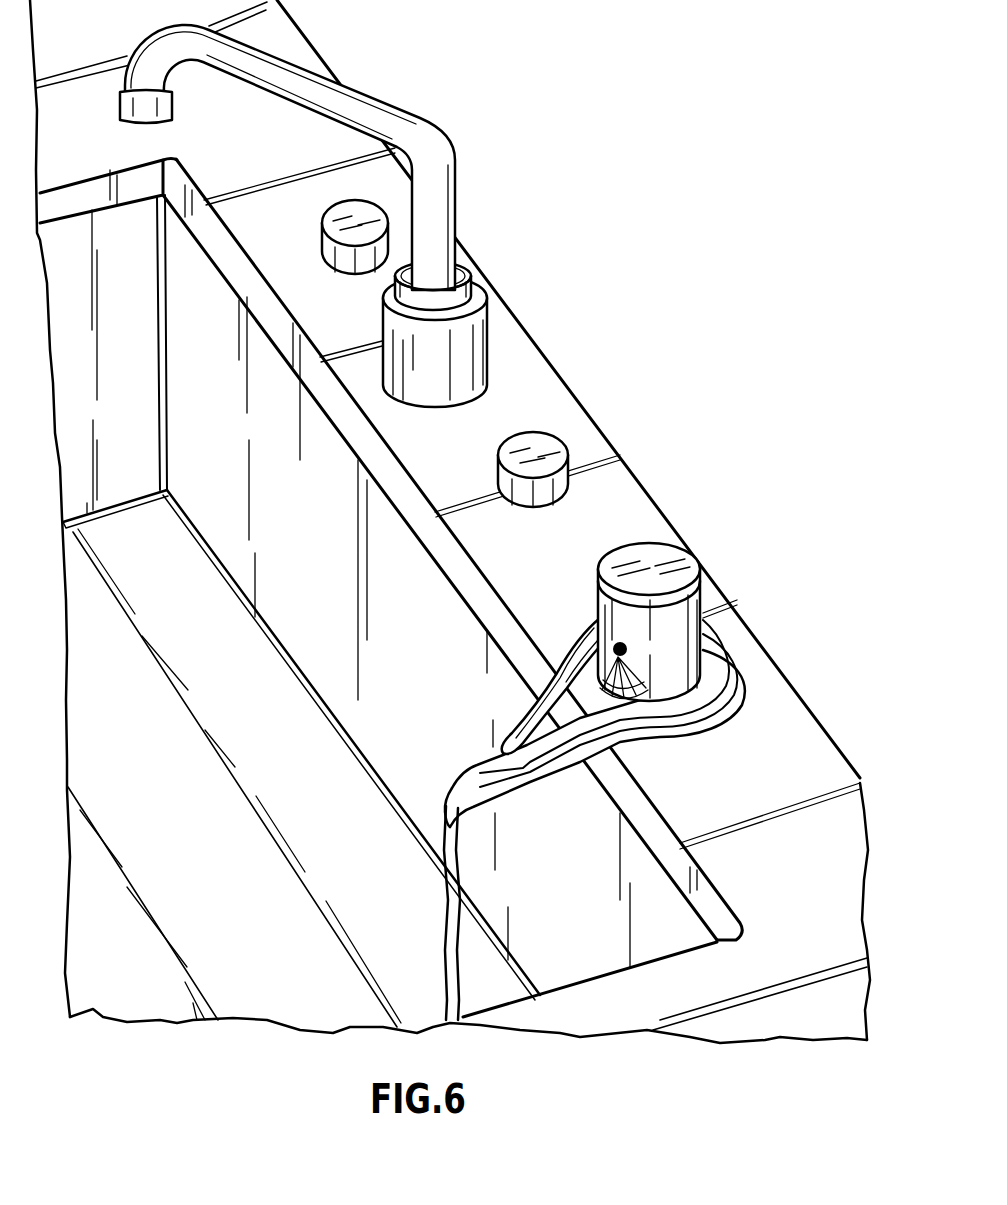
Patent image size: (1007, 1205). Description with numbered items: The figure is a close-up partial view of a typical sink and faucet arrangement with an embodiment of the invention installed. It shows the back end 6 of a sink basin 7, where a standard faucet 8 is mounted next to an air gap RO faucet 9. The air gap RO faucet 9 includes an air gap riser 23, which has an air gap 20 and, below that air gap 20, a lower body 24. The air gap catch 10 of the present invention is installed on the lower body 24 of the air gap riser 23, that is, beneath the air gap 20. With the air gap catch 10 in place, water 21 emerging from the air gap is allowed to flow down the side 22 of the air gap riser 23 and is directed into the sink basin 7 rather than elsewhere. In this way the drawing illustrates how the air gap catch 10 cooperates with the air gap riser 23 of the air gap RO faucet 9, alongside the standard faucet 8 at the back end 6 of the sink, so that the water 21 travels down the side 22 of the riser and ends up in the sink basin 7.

The back end 6 is at (564, 338).
The sink basin 7 is at (243, 705).
The standard faucet 8 is at (460, 152).
The air gap RO faucet 9 is at (715, 600).
The air gap catch 10 is at (743, 667).
The air gap 20 is at (628, 648).
The water 21 is at (466, 784).
The side 22 is at (594, 615).
The air gap riser 23 is at (733, 598).
The lower body 24 is at (713, 624).